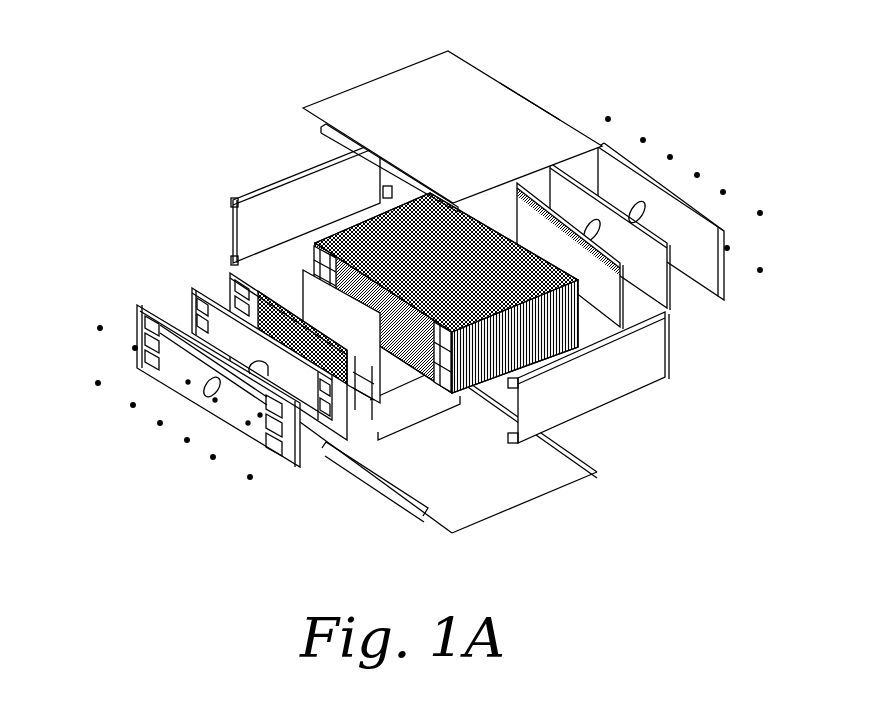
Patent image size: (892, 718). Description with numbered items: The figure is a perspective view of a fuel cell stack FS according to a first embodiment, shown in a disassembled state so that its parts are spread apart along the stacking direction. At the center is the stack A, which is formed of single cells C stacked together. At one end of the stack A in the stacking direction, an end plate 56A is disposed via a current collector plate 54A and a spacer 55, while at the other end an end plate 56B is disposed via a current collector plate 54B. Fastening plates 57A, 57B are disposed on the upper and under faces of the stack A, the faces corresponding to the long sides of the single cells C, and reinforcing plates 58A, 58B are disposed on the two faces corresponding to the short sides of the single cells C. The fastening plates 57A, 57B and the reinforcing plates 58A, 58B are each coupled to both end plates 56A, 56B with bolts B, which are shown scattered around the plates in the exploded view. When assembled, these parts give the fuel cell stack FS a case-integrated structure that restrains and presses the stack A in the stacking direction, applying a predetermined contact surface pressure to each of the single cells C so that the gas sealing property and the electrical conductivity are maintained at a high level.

The fuel cell stack FS is at (568, 111).
The fastening plate 57A is at (380, 105).
The fastening plate 57B is at (412, 483).
The reinforcing plate 58A is at (287, 203).
The reinforcing plate 58B is at (585, 396).
The current collector plate 54A is at (572, 250).
The current collector plate 54B is at (287, 378).
The spacer 55 is at (592, 213).
The end plate 56A is at (607, 173).
The end plate 56B is at (200, 395).
The stack A is at (535, 262).
The bolts B is at (760, 268).
The single cells C is at (419, 427).